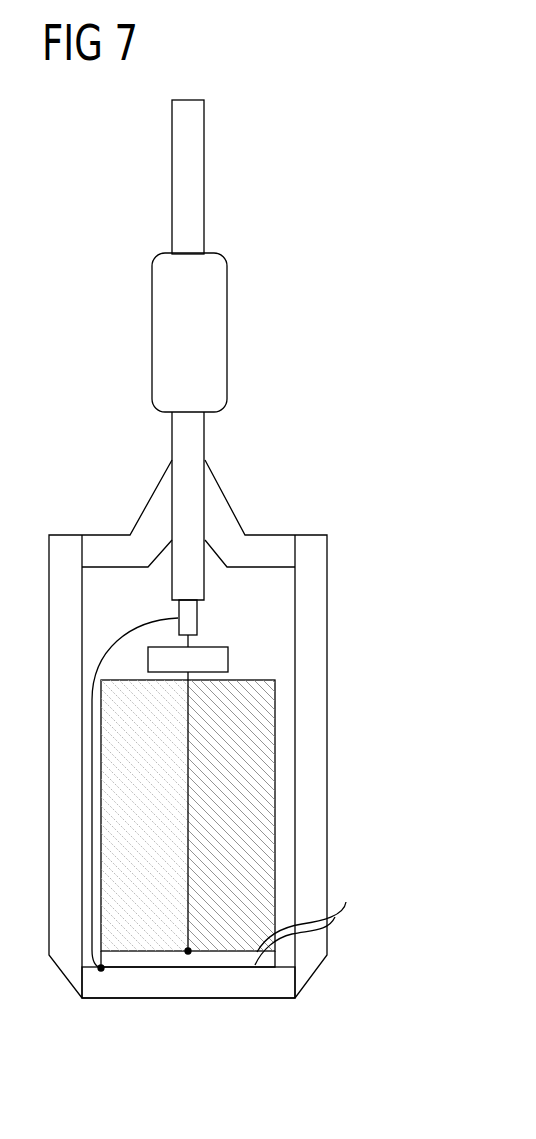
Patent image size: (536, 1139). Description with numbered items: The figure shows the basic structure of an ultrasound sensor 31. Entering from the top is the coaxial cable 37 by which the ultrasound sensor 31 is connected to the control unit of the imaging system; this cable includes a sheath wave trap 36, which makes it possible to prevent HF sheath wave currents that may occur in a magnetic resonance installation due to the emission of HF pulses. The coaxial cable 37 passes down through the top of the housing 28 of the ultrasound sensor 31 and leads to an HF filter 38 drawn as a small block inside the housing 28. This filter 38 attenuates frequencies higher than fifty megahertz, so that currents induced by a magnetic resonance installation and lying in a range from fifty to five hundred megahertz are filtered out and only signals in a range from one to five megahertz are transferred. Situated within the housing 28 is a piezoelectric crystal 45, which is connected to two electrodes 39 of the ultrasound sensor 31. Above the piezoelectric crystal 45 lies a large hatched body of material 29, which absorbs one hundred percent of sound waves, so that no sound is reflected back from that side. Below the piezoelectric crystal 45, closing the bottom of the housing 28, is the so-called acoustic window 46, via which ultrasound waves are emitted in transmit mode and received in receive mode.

The ultrasound sensor 31 is at (306, 231).
The sheath wave trap 36 is at (215, 333).
The coaxial cable 37 is at (193, 440).
The housing 28 is at (65, 543).
The HF filter 38 is at (212, 658).
The material 29 is at (257, 810).
The electrodes 39 is at (308, 917).
The piezoelectric crystal 45 is at (140, 958).
The acoustic window 46 is at (223, 988).